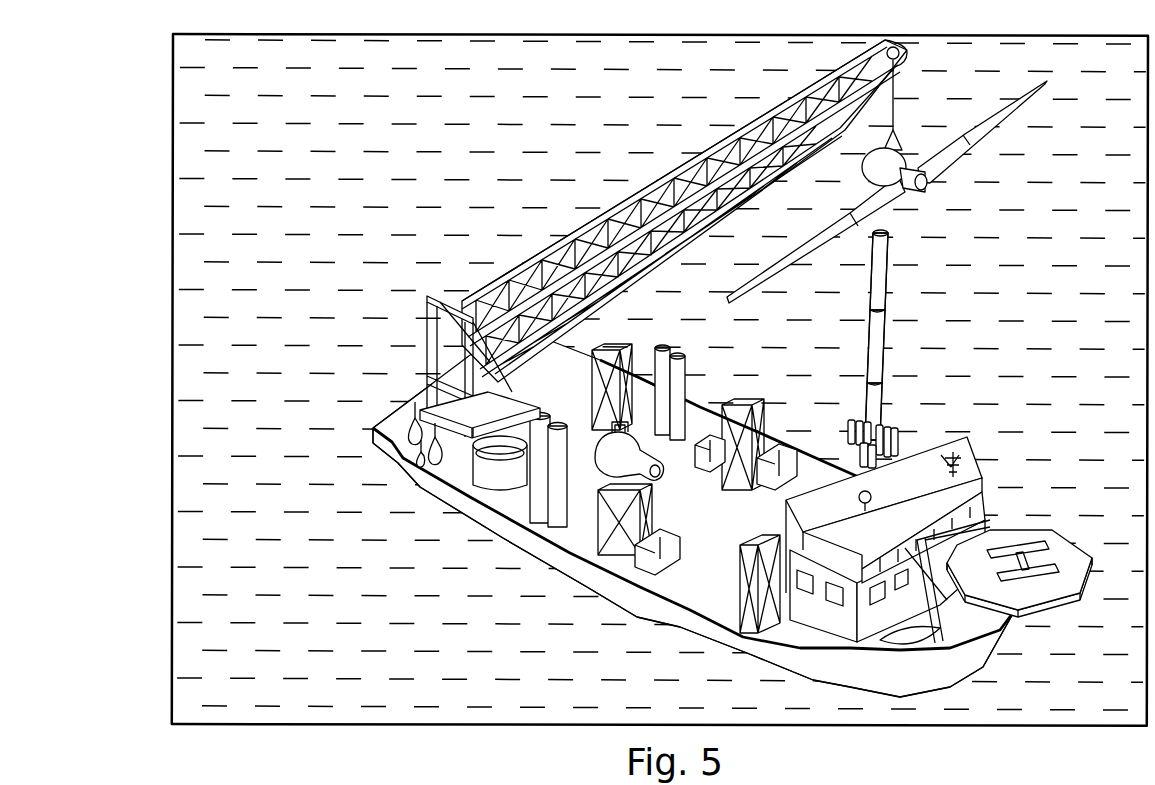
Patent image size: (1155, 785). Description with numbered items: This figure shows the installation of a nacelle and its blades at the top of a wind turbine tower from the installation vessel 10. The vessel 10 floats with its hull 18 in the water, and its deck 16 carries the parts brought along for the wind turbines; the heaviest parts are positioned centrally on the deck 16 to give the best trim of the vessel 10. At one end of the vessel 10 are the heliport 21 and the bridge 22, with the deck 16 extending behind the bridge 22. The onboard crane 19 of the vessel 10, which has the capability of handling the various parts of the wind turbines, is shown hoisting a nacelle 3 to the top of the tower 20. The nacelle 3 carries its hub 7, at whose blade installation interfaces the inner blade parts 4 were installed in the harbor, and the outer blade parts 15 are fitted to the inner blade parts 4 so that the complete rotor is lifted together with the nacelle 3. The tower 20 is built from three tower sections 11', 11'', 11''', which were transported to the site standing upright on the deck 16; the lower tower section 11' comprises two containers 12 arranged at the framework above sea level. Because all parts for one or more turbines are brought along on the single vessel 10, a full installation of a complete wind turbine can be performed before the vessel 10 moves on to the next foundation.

The nacelle 3 is at (870, 170).
The inner blade parts 4 is at (938, 162).
The hub 7 is at (930, 188).
The vessel 10 is at (525, 568).
The lower tower section 11' is at (923, 409).
The tower section 11'' is at (927, 347).
The tower section 11''' is at (931, 271).
The containers 12 is at (852, 425).
The outer blade parts 15 is at (378, 450).
The deck 16 is at (736, 519).
The hull 18 is at (916, 686).
The onboard crane 19 is at (636, 216).
The tower 20 is at (890, 233).
The heliport 21 is at (1055, 545).
The bridge 22 is at (923, 509).